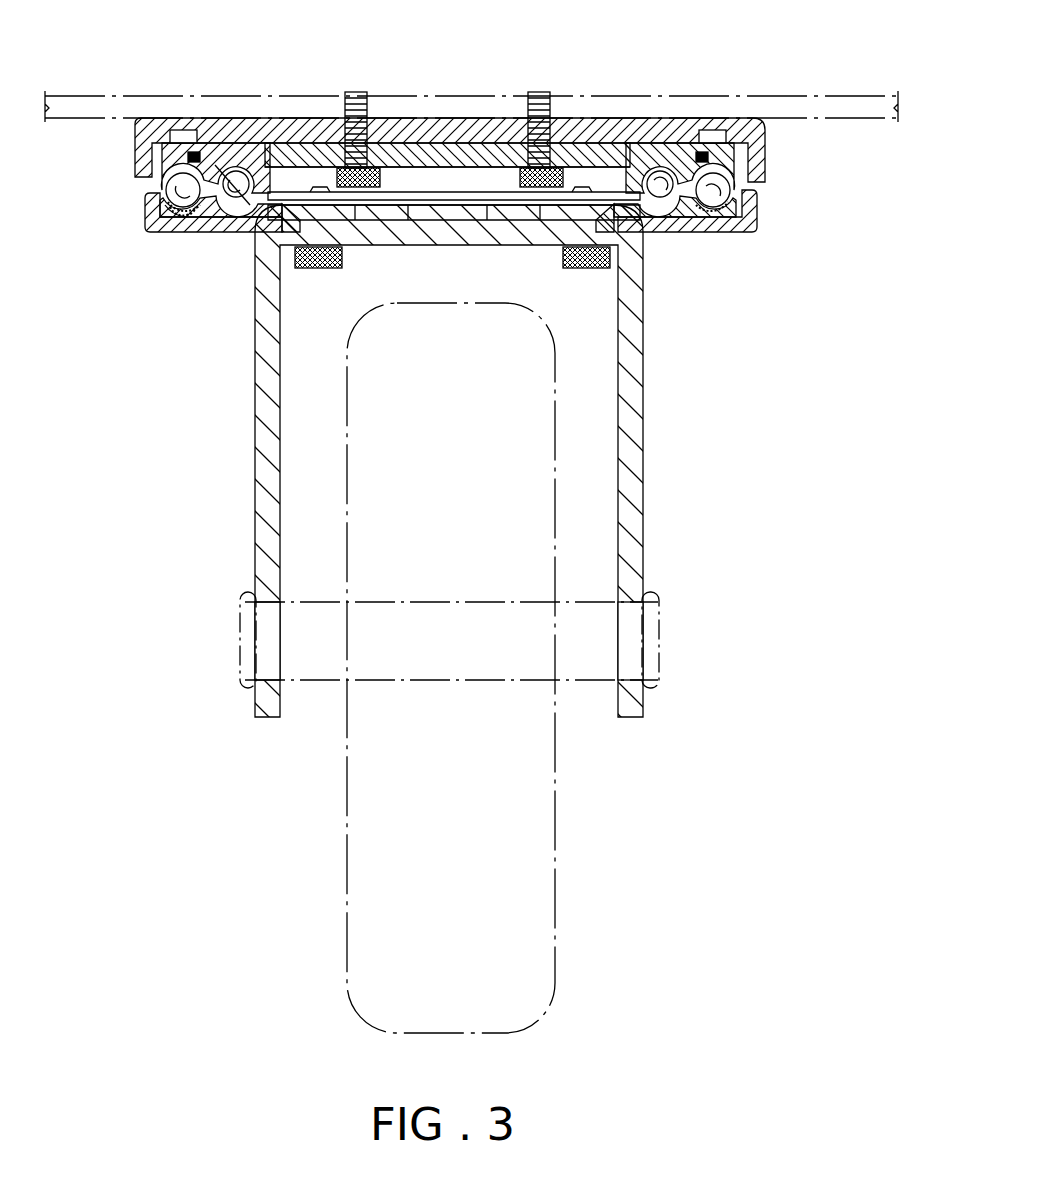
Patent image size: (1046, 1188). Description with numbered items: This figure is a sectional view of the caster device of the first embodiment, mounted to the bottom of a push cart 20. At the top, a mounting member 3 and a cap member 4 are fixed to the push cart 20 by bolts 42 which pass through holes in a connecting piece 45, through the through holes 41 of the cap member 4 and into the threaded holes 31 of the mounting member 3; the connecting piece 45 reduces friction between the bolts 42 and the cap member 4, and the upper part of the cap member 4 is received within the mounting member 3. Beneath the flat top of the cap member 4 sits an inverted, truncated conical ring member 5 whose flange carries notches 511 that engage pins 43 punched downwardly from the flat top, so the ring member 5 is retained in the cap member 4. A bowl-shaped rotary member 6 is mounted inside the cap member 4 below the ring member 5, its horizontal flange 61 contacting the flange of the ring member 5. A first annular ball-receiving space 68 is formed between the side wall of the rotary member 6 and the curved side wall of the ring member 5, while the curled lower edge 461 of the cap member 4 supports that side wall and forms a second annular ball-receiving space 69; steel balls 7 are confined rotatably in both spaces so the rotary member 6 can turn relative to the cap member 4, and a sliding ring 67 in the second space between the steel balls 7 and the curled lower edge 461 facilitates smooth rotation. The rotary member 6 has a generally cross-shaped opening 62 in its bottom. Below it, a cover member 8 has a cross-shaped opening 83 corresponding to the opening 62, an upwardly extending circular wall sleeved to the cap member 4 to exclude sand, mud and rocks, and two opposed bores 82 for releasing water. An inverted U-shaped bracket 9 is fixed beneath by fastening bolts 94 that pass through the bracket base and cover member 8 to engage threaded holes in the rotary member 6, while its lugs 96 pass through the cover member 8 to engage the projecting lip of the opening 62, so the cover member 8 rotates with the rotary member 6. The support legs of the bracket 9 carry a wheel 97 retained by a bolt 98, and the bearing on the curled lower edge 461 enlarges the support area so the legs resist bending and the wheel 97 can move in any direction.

The push cart 20 is at (91, 94).
The mounting member 3 is at (134, 128).
The pins 43 is at (204, 150).
The notches 511 is at (178, 134).
The horizontal flange 61 is at (748, 168).
The steel balls 7 is at (256, 147).
The rotary member 6 is at (680, 238).
The second annular ball-receiving space 69 is at (160, 193).
The cover member 8 is at (137, 235).
The bores 82 is at (733, 232).
The cap member 4 is at (462, 148).
The connecting piece 45 is at (600, 150).
The threaded holes 31 is at (348, 108).
The through holes 41 is at (364, 135).
The bolts 42 is at (530, 96).
The ring member 5 is at (646, 120).
The cross-shaped opening 83 is at (385, 210).
The opening 62 is at (345, 212).
The lugs 96 is at (560, 210).
The bracket 9 is at (637, 446).
The fastening bolts 94 is at (312, 270).
The wheel 97 is at (551, 890).
The bolt 98 is at (660, 642).
The sliding ring 67 is at (180, 232).
The first annular ball-receiving space 68 is at (226, 232).
The curled lower edge 461 is at (188, 238).